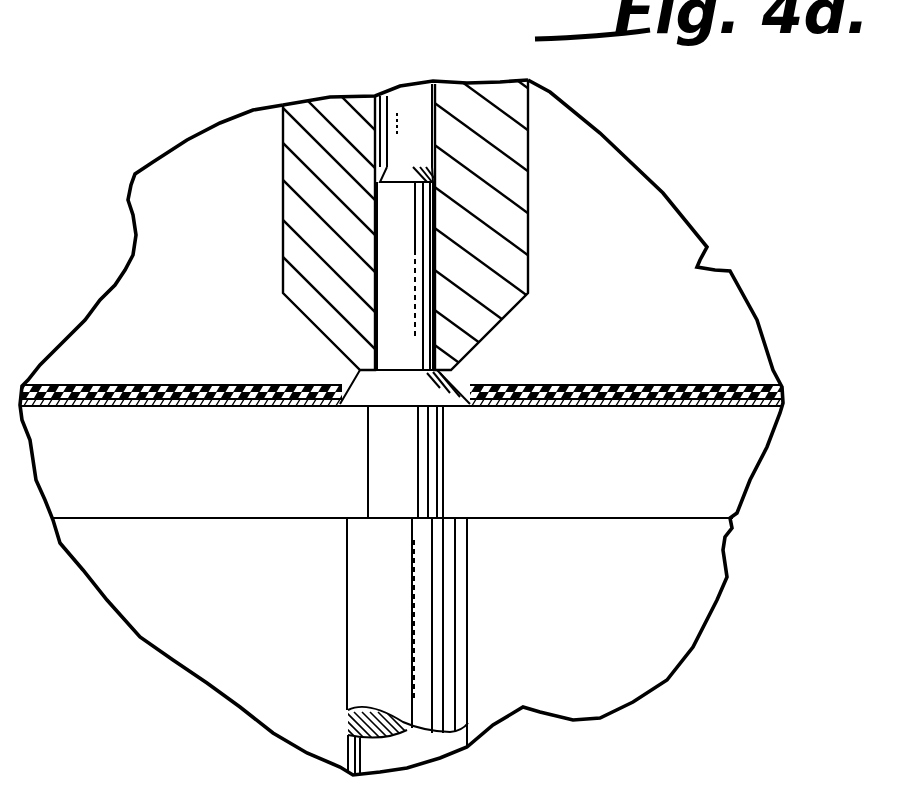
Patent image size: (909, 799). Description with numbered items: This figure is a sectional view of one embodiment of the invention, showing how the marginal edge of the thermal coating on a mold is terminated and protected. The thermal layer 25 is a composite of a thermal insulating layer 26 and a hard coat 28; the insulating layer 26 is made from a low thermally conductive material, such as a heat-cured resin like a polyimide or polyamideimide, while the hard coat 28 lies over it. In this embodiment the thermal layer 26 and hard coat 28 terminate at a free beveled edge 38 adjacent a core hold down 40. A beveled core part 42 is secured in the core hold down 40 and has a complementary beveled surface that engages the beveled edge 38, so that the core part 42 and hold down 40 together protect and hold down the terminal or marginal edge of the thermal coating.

The thermal layer 25 is at (741, 366).
The thermal insulating layer 26 is at (600, 386).
The hard coat 28 is at (657, 406).
The free beveled edge 38 is at (478, 378).
The core hold down 40 is at (390, 226).
The beveled core part 42 is at (368, 382).